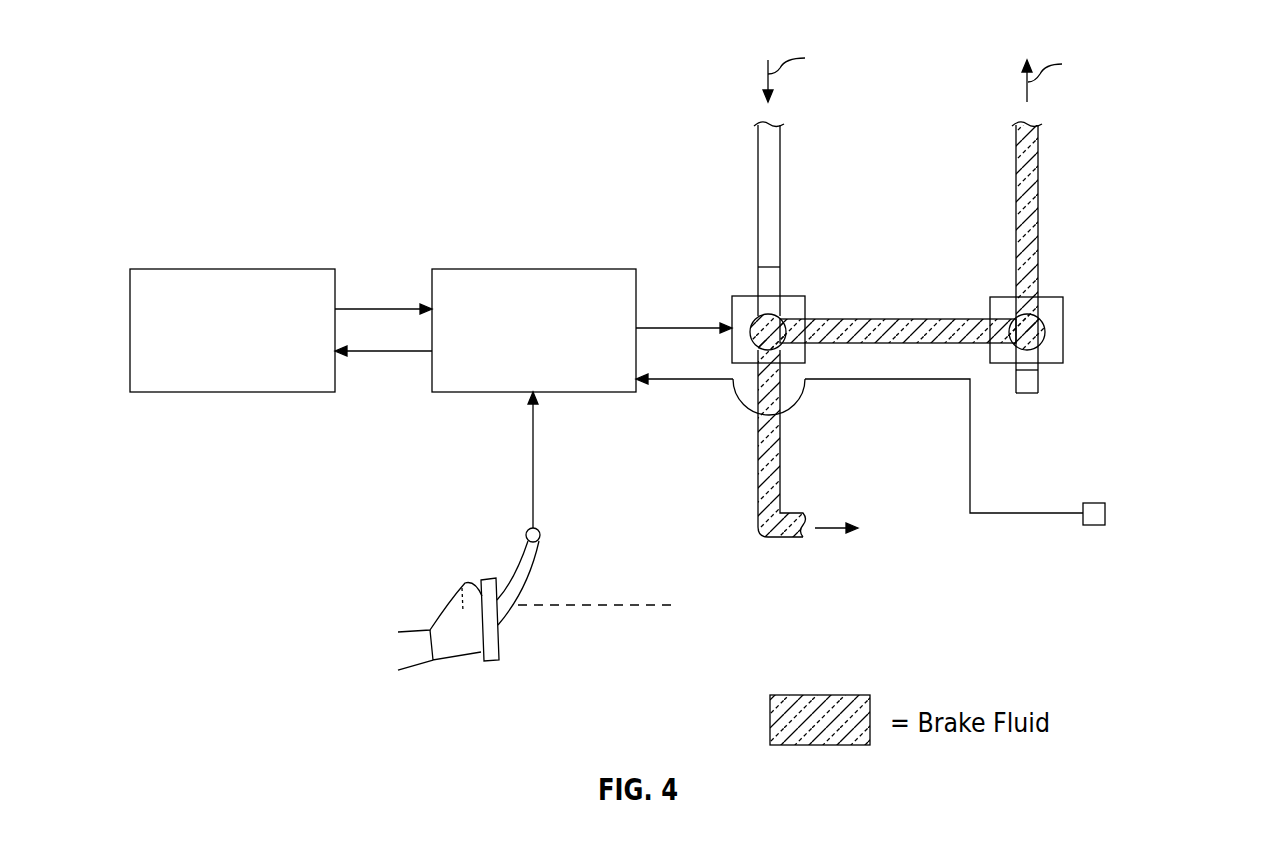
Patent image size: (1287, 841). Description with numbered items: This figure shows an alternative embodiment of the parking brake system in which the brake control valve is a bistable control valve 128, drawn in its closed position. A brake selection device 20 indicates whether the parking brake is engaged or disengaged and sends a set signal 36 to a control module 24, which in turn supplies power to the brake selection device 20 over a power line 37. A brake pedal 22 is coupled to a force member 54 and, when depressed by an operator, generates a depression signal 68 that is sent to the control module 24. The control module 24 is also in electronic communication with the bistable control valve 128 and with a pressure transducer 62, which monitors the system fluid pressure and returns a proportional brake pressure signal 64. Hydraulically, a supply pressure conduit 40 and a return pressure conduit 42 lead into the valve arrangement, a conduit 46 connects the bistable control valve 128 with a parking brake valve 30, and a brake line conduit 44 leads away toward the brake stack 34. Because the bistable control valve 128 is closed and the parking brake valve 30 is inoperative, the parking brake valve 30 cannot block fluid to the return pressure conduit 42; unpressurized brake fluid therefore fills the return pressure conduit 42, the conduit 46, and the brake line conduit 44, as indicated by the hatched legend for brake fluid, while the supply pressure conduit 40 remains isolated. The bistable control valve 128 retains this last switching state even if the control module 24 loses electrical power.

The brake selection device 20 is at (182, 395).
The brake pedal 22 is at (487, 578).
The control module 24 is at (535, 268).
The parking brake valve 30 is at (1042, 327).
The brake stack 34 is at (892, 546).
The set signal 36 is at (385, 306).
The power line 37 is at (383, 353).
The supply pressure conduit 40 is at (766, 170).
The return pressure conduit 42 is at (1025, 212).
The brake line conduit 44 is at (770, 436).
The conduit 46 is at (915, 346).
The force member 54 is at (670, 619).
The pressure transducer 62 is at (1096, 527).
The brake pressure signal 64 is at (972, 436).
The depression signal 68 is at (533, 465).
The bistable control valve 128 is at (760, 316).